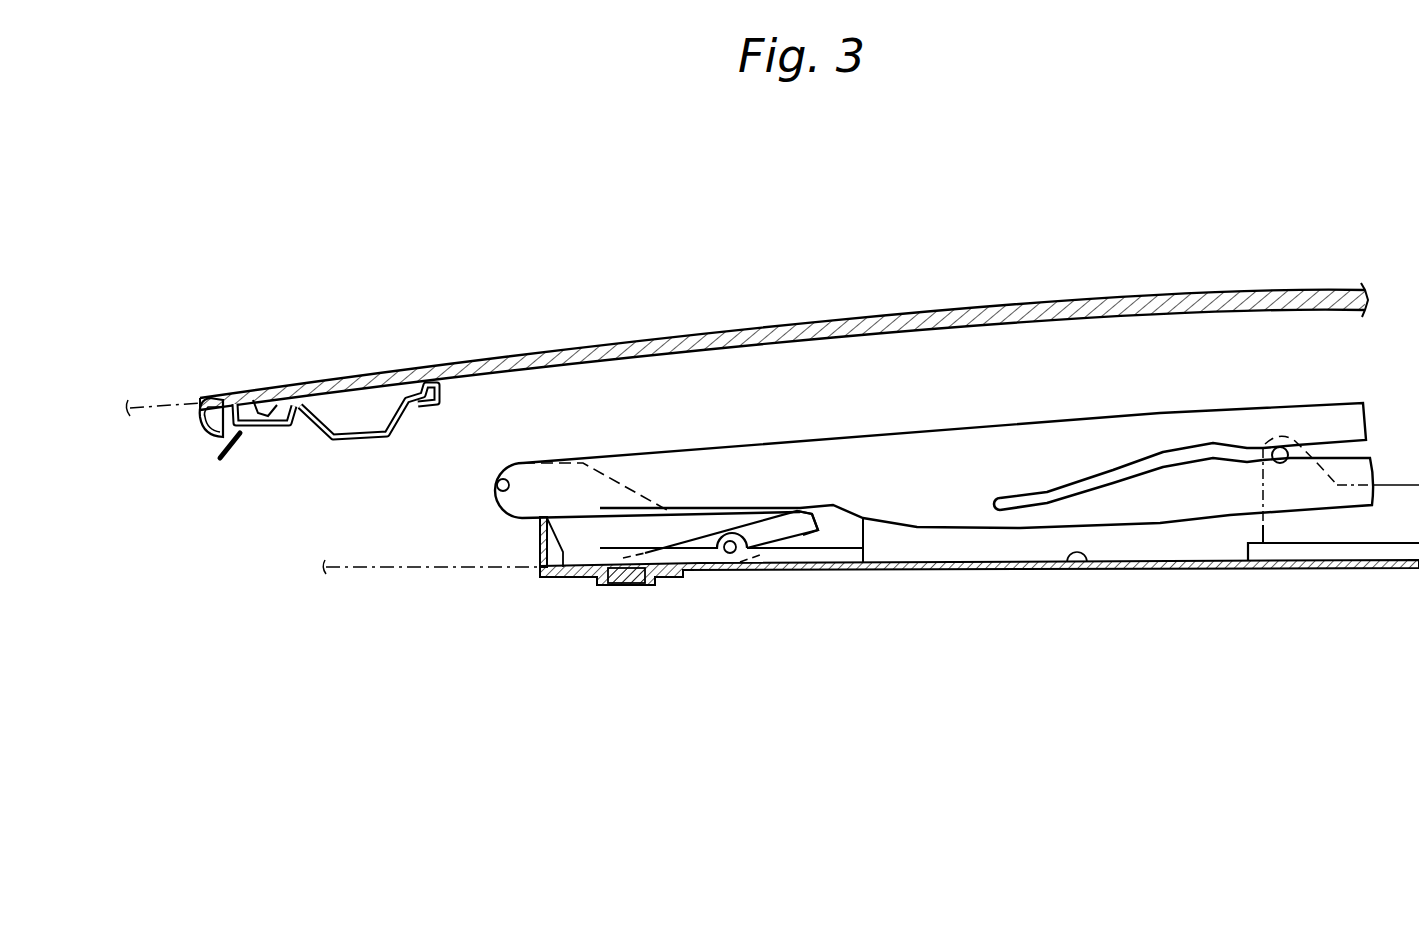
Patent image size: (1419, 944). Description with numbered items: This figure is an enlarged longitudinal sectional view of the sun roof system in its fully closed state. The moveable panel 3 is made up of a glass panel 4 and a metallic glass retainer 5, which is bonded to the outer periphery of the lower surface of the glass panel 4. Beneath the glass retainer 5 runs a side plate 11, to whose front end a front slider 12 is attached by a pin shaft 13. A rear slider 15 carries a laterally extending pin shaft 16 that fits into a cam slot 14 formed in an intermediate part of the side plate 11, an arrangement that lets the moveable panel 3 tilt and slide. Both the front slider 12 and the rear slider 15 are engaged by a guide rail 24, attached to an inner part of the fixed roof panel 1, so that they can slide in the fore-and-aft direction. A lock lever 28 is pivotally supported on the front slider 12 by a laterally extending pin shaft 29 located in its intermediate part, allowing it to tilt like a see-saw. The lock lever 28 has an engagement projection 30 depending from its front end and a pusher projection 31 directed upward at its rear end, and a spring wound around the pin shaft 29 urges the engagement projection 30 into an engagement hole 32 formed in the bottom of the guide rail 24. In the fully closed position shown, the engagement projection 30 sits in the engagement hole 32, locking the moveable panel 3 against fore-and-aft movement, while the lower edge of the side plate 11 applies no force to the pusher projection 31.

The fixed roof panel 1 is at (173, 405).
The moveable panel 3 is at (577, 344).
The glass panel 4 is at (765, 336).
The glass retainer 5 is at (357, 445).
The side plate 11 is at (978, 441).
The front slider 12 is at (580, 542).
The pin shaft 13 is at (488, 486).
The cam slot 14 is at (1120, 474).
The rear slider 15 is at (1262, 525).
The pin shaft 16 is at (1284, 447).
The guide rail 24 is at (1088, 572).
The lock lever 28 is at (790, 533).
The pin shaft 29 is at (733, 567).
The engagement projection 30 is at (607, 585).
The pusher projection 31 is at (798, 510).
The engagement hole 32 is at (613, 582).